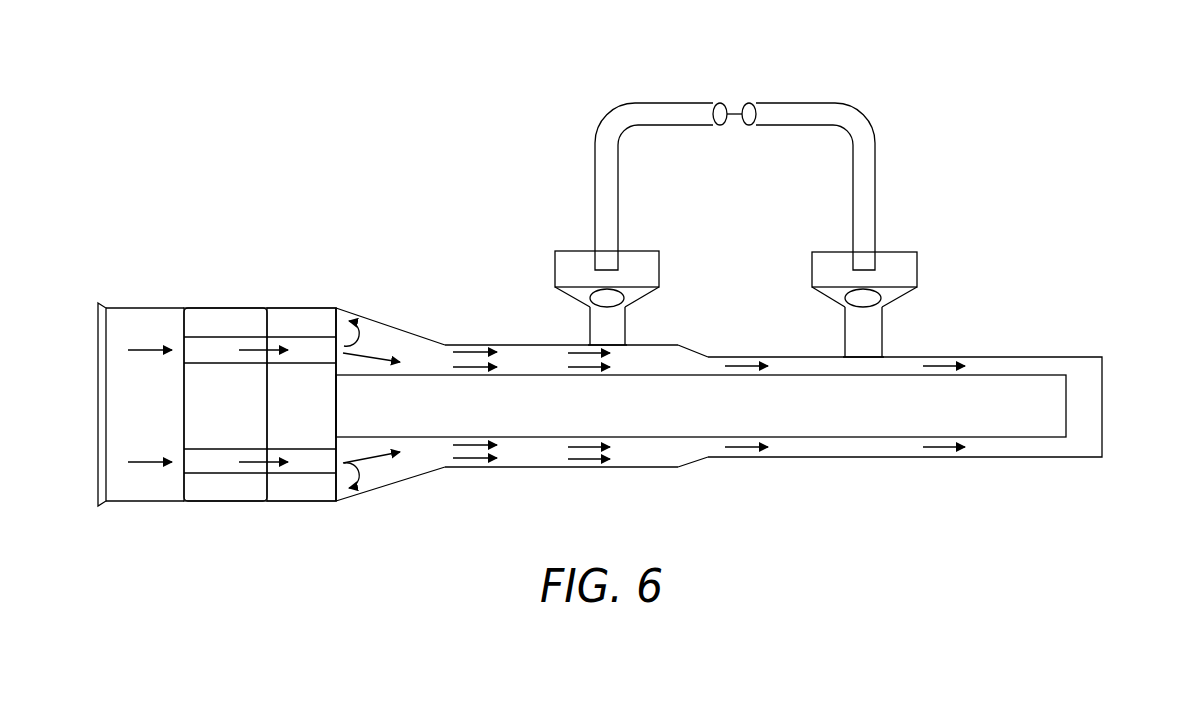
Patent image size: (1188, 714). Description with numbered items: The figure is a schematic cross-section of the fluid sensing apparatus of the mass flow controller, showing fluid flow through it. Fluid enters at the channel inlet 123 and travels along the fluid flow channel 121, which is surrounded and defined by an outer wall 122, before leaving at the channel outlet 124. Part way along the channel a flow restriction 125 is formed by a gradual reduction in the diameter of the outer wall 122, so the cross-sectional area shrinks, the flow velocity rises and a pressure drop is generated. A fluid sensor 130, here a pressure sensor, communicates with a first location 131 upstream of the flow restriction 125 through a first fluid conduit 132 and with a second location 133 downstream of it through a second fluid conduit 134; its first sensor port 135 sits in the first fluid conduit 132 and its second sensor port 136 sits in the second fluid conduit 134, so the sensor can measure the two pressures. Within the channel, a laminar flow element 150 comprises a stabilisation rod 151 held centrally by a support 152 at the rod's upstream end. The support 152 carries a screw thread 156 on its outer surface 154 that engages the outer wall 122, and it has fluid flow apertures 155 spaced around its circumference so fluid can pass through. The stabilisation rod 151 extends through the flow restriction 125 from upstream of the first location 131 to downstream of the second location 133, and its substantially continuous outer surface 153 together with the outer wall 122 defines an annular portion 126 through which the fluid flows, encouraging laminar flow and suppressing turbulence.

The fluid flow channel 121 is at (405, 338).
The outer wall 122 is at (589, 468).
The channel inlet 123 is at (112, 406).
The channel outlet 124 is at (1102, 408).
The flow restriction 125 is at (699, 464).
The annular portion 126 is at (520, 468).
The fluid sensor 130 is at (736, 104).
The first location 131 is at (614, 347).
The first fluid conduit 132 is at (592, 323).
The second location 133 is at (872, 358).
The second fluid conduit 134 is at (850, 323).
The first sensor port 135 is at (598, 221).
The second sensor port 136 is at (868, 221).
The laminar flow element 150 is at (312, 290).
The stabilisation rod 151 is at (868, 427).
The support 152 is at (281, 497).
The outer surface 153 is at (663, 437).
The outer surface 154 is at (315, 500).
The fluid flow apertures 155 is at (201, 343).
The screw thread 156 is at (246, 308).